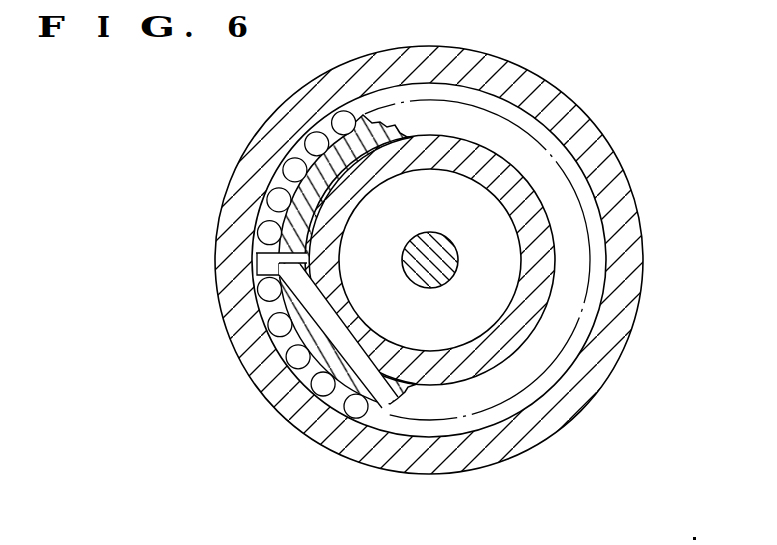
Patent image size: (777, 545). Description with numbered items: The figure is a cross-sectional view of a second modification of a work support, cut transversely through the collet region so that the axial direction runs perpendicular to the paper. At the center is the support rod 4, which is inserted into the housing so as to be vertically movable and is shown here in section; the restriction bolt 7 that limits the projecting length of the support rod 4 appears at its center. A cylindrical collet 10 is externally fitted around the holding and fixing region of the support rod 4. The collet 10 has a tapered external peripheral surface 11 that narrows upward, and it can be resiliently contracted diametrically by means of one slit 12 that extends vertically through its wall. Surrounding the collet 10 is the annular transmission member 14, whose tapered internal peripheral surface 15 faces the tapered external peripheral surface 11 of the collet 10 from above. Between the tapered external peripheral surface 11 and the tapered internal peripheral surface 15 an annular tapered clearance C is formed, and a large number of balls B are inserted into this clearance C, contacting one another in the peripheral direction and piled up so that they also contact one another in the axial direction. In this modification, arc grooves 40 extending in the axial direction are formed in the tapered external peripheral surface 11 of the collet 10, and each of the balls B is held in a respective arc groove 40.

The support rod 4 is at (517, 218).
The restriction bolt 7 is at (445, 276).
The collet 10 is at (347, 340).
The tapered external peripheral surface 11 is at (279, 352).
The slit 12 is at (296, 263).
The transmission member 14 is at (582, 113).
The tapered internal peripheral surface 15 is at (538, 117).
The arc grooves 40 is at (287, 193).
The balls B is at (263, 208).
The annular tapered clearance C is at (297, 146).